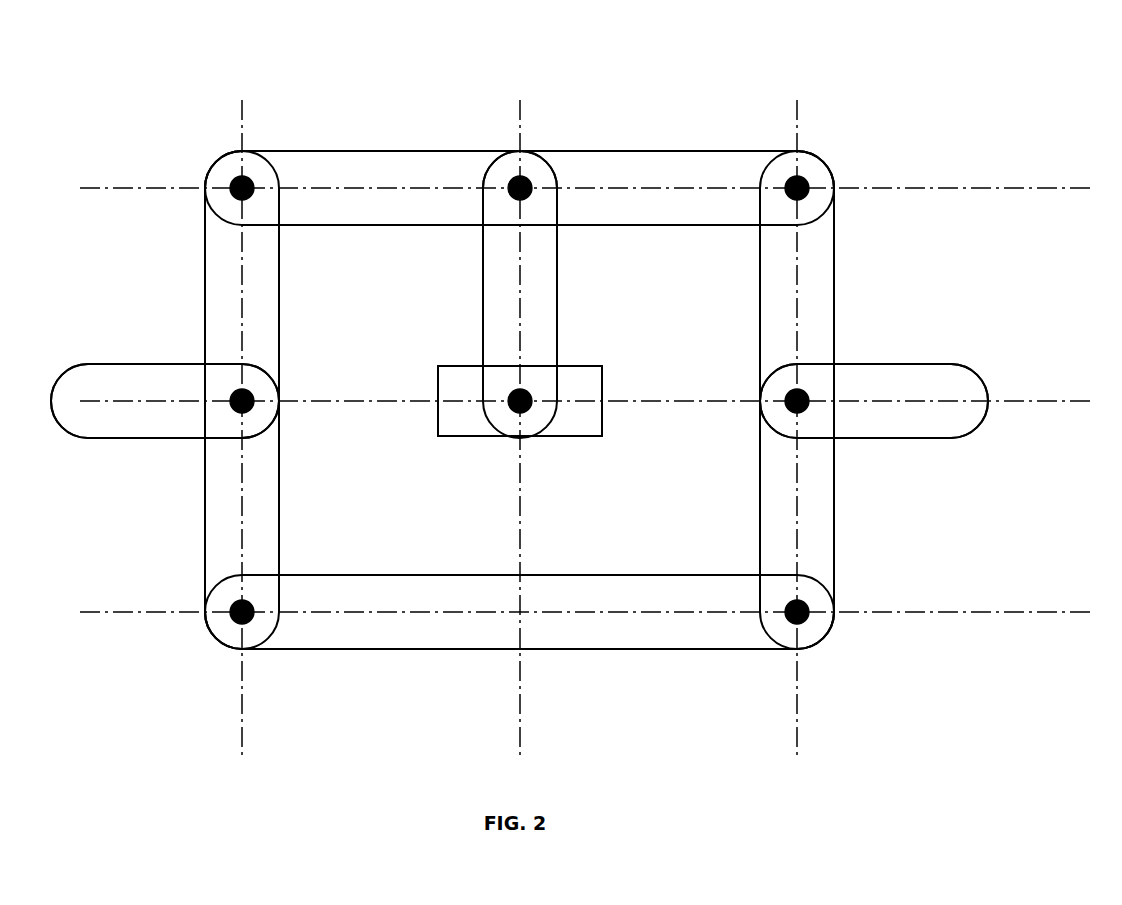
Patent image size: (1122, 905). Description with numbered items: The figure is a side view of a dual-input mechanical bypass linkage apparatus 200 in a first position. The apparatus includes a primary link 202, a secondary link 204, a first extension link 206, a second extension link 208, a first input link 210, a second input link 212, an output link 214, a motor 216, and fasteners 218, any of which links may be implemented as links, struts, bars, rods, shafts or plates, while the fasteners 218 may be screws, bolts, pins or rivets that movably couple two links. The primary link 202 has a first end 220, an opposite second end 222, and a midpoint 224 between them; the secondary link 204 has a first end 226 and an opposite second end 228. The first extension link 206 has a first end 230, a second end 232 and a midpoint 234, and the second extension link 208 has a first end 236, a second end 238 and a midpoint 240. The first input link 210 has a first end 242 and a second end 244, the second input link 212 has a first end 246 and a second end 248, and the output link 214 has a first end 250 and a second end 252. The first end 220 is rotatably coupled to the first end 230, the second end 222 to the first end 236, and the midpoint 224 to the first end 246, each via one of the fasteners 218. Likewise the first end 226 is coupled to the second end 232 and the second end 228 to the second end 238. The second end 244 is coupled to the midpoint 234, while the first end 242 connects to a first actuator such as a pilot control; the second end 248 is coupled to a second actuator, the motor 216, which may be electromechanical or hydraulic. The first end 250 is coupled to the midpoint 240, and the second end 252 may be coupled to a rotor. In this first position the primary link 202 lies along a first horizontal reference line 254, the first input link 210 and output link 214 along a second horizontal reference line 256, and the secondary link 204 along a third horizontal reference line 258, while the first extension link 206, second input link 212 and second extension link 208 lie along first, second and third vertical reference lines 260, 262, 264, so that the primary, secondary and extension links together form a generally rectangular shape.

The dual-input mechanical bypass linkage apparatus 200 is at (858, 70).
The primary link 202 is at (356, 152).
The secondary link 204 is at (392, 652).
The first extension link 206 is at (205, 292).
The second extension link 208 is at (835, 307).
The first input link 210 is at (148, 438).
The second input link 212 is at (557, 305).
The output link 214 is at (885, 438).
The motor 216 is at (566, 437).
The fasteners 218 is at (235, 180).
The first end of primary link 220 is at (262, 152).
The second end of primary link 222 is at (776, 152).
The midpoint of primary link 224 is at (542, 152).
The first end of secondary link 226 is at (268, 650).
The second end of secondary link 228 is at (770, 651).
The first end of first extension link 230 is at (204, 204).
The second end of first extension link 232 is at (205, 582).
The midpoint of first extension link 234 is at (283, 428).
The first end of second extension link 236 is at (836, 210).
The second end of second extension link 238 is at (835, 582).
The midpoint of second extension link 240 is at (762, 427).
The first end of first input link 242 is at (86, 365).
The second end of first input link 244 is at (252, 366).
The first end of second input link 246 is at (484, 202).
The second end of second input link 248 is at (483, 375).
The first end of output link 250 is at (783, 365).
The second end of output link 252 is at (957, 364).
The first horizontal reference line 254 is at (1020, 189).
The second horizontal reference line 256 is at (1020, 402).
The third horizontal reference line 258 is at (1020, 613).
The first vertical reference line 260 is at (243, 720).
The second vertical reference line 262 is at (522, 721).
The third vertical reference line 264 is at (800, 721).